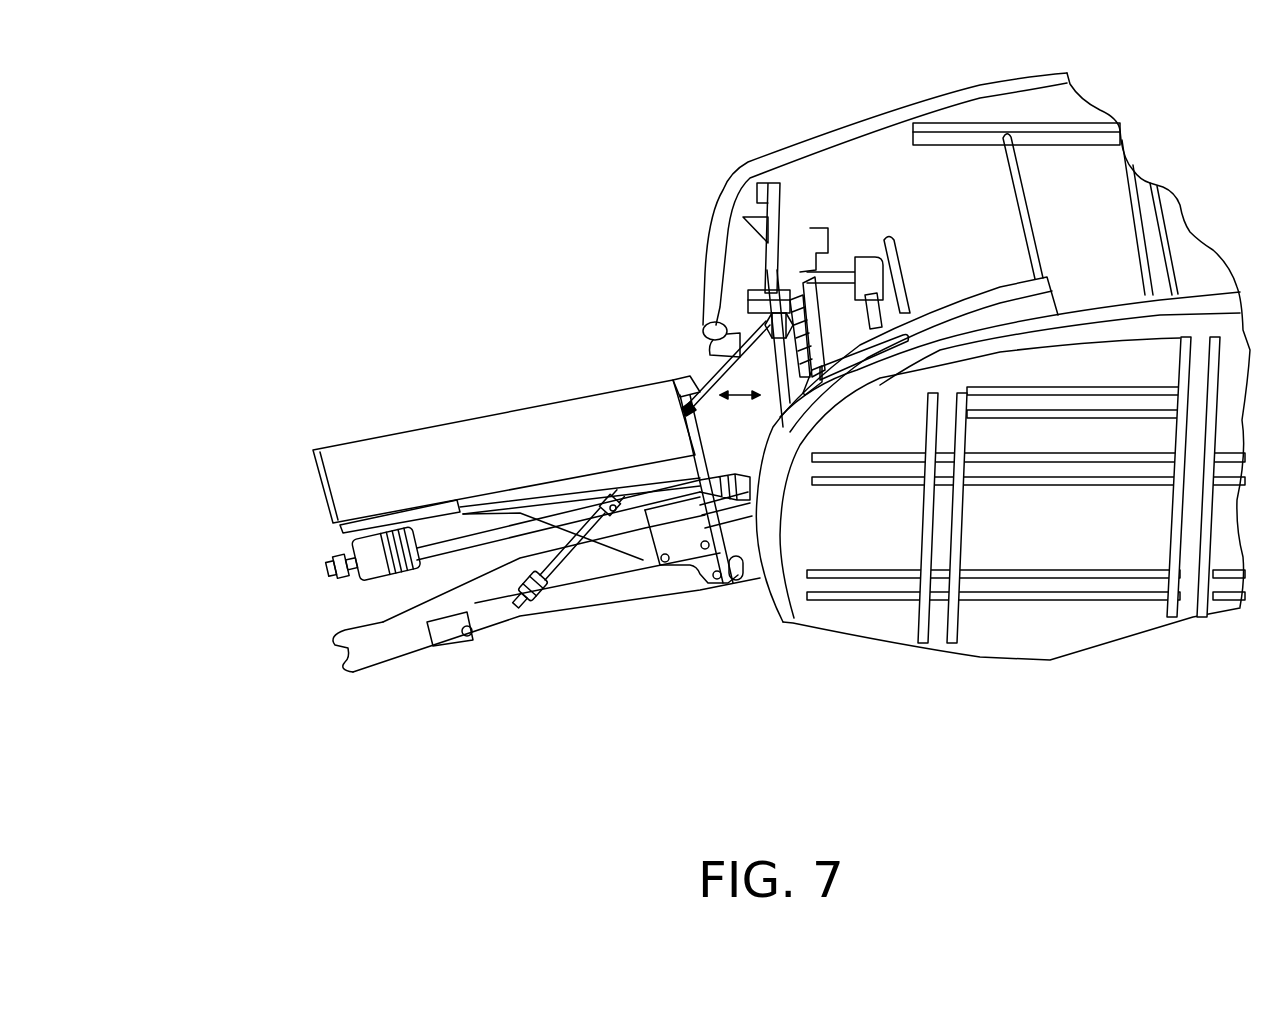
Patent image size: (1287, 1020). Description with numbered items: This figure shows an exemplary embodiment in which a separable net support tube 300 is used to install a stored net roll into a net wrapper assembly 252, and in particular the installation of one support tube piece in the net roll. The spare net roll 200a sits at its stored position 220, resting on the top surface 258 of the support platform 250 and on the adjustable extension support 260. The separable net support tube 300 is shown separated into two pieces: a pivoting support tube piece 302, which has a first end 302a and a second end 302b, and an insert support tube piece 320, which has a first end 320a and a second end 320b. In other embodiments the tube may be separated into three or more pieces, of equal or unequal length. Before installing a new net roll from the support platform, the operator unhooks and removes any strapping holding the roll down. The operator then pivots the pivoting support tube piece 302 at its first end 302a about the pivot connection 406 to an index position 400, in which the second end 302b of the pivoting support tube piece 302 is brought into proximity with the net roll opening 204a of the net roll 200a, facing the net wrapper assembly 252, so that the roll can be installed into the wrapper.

The net wrapper assembly 252 is at (708, 152).
The pivot connection 406 is at (790, 325).
The first end of pivoting support tube piece 302a is at (765, 325).
The index position 400 is at (735, 328).
The second end of pivoting support tube piece 302b is at (680, 395).
The pivoting support tube piece 302 is at (690, 360).
The top surface 258 is at (347, 462).
The net roll opening 204a is at (607, 495).
The spare net roll 200a is at (505, 495).
The first end of insert support tube piece 320a is at (507, 495).
The stored position 220 is at (262, 462).
The adjustable extension support 260 is at (380, 517).
The support platform 250 is at (660, 565).
The second end of insert support tube piece 320b is at (523, 597).
The insert support tube piece 320 is at (580, 570).
The separable net support tube 300 is at (736, 495).